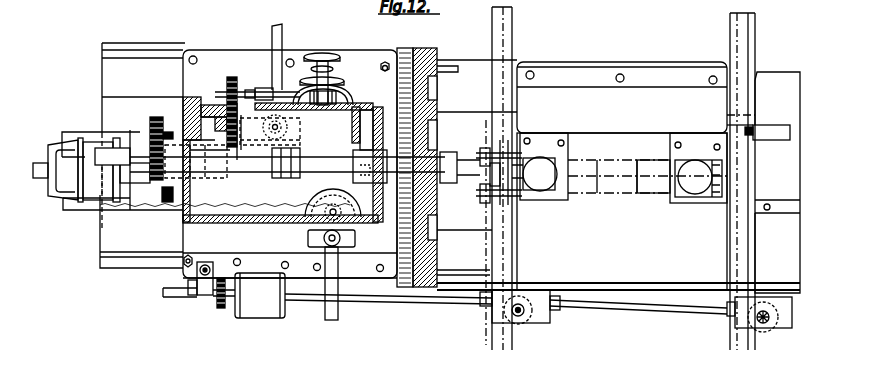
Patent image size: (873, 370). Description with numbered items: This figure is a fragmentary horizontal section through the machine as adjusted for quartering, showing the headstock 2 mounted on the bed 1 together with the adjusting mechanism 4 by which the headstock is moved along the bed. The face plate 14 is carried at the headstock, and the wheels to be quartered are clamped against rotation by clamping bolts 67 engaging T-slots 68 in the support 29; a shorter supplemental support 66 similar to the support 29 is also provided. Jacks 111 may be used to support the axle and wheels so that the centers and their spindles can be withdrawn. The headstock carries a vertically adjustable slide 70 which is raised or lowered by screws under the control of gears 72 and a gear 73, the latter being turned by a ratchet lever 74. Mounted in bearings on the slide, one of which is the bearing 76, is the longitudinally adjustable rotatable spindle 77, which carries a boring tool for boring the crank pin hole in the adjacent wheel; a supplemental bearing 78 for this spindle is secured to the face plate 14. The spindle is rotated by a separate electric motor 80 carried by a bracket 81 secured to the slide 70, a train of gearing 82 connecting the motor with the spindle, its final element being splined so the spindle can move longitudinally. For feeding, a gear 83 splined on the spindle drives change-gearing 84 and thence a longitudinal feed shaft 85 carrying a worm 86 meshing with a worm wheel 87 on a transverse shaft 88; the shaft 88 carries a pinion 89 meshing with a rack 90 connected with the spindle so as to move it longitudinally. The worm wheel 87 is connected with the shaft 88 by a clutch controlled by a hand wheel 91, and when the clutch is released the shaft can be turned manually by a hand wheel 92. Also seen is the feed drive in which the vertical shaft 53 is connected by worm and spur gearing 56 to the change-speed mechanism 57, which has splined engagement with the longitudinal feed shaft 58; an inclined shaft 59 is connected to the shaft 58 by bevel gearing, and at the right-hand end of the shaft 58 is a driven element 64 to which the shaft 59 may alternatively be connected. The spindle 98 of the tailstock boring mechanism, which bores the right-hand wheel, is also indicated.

The bed 1 is at (140, 245).
The headstock 2 is at (232, 55).
The adjusting mechanism 4 is at (337, 254).
The face plate 14 is at (437, 50).
The support 29 is at (622, 211).
The vertical shaft 53 is at (213, 262).
The worm and spur gearing 56 is at (220, 308).
The change-speed mechanism 57 is at (263, 312).
The longitudinal feed shaft 58 is at (600, 318).
The inclined shaft 59 is at (535, 320).
The driven element 64 is at (768, 332).
The supplemental support 66 is at (777, 182).
The clamping bolts 67 is at (497, 150).
The T-slots 68 is at (527, 150).
The vertically adjustable slide 70 is at (353, 103).
The gears 72 is at (338, 124).
The gear 73 is at (287, 123).
The ratchet lever 74 is at (283, 40).
The bearing 76 is at (368, 134).
The spindle 77 is at (108, 155).
The supplemental bearing 78 is at (457, 160).
The electric motor 80 is at (95, 188).
The bracket 81 is at (143, 208).
The train of gearing 82 is at (150, 135).
The gear 83 is at (211, 170).
The change-gearing 84 is at (227, 80).
The longitudinal feed shaft 85 is at (262, 88).
The worm 86 is at (345, 83).
The worm wheel 87 is at (340, 94).
The transverse shaft 88 is at (285, 138).
The pinion 89 is at (287, 171).
The rack 90 is at (370, 166).
The hand wheel 91 is at (336, 70).
The hand wheel 92 is at (335, 55).
The spindle 98 is at (775, 125).
The jacks 111 is at (567, 165).